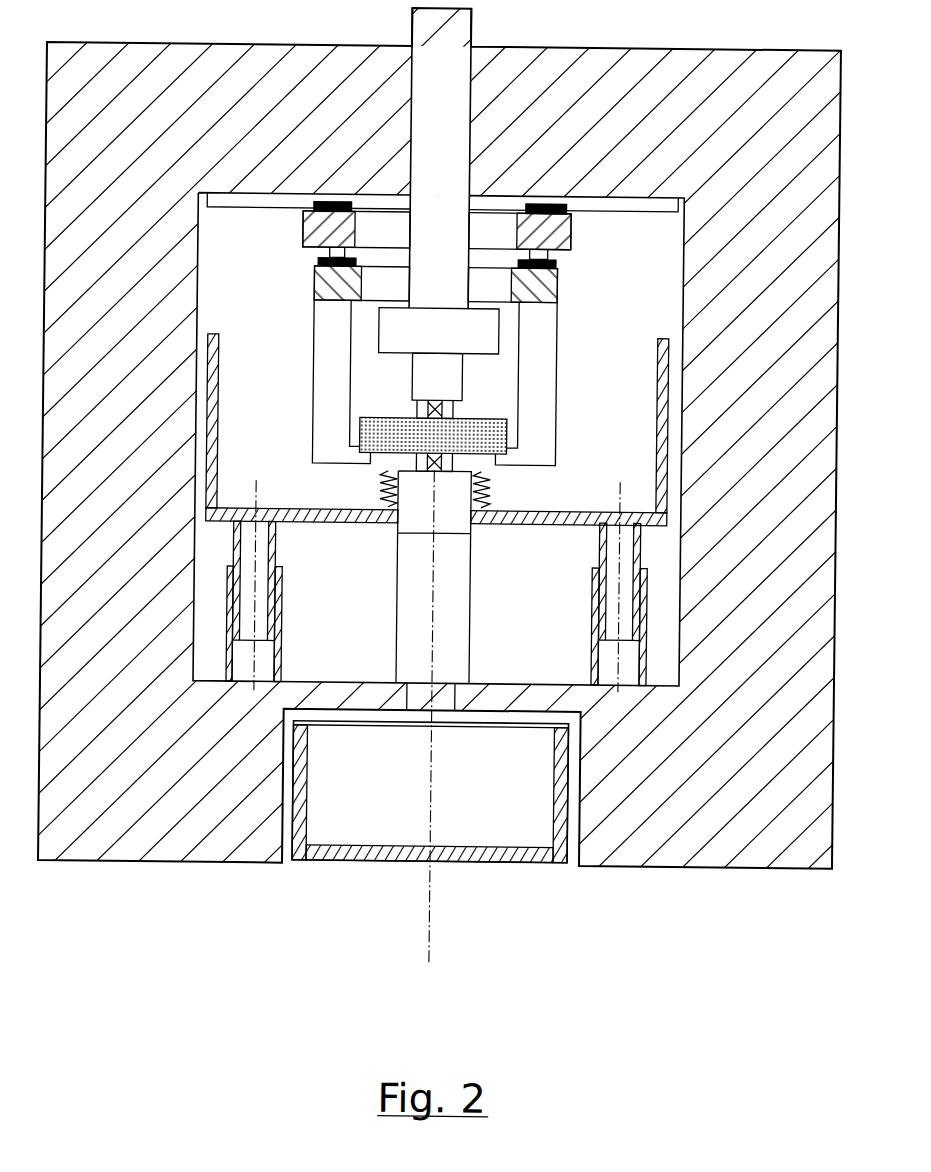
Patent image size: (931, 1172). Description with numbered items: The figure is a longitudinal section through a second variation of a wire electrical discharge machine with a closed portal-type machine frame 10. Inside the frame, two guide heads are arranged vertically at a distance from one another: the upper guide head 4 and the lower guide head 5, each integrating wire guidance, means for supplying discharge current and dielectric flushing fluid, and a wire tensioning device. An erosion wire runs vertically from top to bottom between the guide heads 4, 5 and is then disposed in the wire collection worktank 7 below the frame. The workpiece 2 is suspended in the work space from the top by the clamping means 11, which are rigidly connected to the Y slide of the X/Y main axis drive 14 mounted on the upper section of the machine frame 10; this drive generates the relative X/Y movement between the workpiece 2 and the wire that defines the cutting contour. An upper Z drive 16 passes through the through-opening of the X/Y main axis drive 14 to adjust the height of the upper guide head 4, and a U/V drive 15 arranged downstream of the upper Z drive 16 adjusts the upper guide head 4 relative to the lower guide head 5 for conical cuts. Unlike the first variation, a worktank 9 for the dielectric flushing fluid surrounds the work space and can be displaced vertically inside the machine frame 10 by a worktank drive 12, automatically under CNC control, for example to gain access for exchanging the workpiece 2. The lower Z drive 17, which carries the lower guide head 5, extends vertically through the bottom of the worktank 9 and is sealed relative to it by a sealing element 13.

The workpiece 2 is at (497, 438).
The upper guide head 4 is at (454, 411).
The lower guide head 5 is at (451, 451).
The wire collection worktank 7 is at (537, 828).
The worktank 9 is at (216, 453).
The machine frame 10 is at (804, 439).
The clamping means 11 is at (326, 352).
The worktank drive 12 is at (269, 611).
The sealing element 13 is at (387, 489).
The X/Y main axis drive 14 is at (560, 287).
The U/V drive 15 is at (452, 345).
The upper Z drive 16 is at (452, 246).
The lower Z drive 17 is at (445, 584).